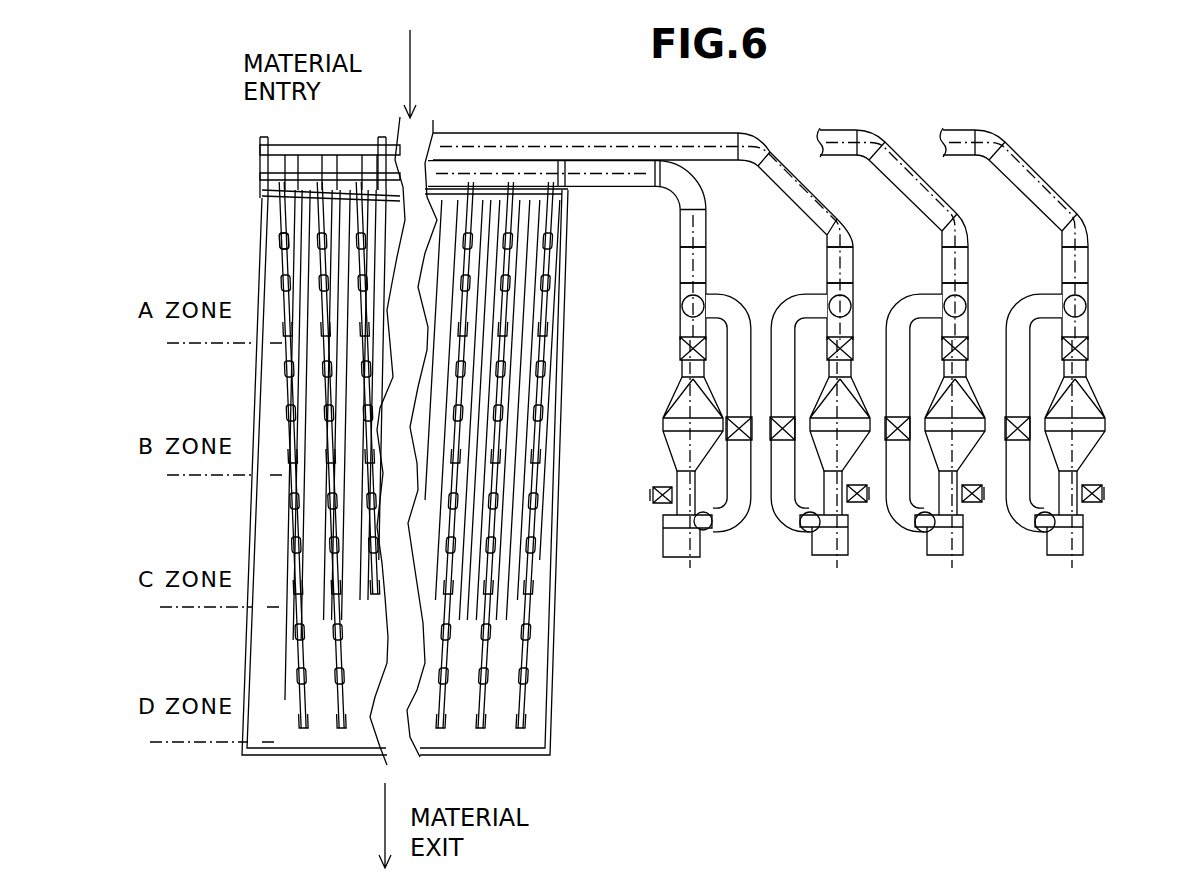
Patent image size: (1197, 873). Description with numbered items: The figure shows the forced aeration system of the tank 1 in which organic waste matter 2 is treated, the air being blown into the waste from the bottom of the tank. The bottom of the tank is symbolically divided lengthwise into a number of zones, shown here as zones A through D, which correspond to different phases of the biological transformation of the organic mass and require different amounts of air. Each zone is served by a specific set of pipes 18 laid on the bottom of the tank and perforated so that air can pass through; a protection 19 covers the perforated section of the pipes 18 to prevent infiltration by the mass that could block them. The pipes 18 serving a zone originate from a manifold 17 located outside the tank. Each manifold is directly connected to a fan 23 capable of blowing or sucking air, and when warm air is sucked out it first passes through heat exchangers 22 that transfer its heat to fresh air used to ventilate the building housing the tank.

The drying chamber housing 1 is at (468, 755).
The material web 2 is at (360, 688).
The manifold 17 is at (508, 143).
The pipes 18 is at (283, 265).
The protection 19 is at (282, 238).
The heat exchangers 22 is at (1085, 425).
The fan 23 is at (1080, 540).